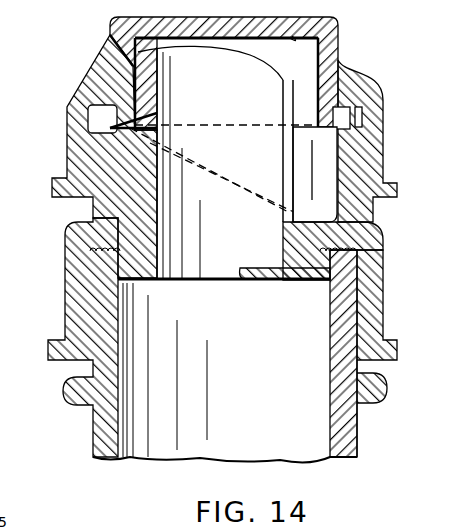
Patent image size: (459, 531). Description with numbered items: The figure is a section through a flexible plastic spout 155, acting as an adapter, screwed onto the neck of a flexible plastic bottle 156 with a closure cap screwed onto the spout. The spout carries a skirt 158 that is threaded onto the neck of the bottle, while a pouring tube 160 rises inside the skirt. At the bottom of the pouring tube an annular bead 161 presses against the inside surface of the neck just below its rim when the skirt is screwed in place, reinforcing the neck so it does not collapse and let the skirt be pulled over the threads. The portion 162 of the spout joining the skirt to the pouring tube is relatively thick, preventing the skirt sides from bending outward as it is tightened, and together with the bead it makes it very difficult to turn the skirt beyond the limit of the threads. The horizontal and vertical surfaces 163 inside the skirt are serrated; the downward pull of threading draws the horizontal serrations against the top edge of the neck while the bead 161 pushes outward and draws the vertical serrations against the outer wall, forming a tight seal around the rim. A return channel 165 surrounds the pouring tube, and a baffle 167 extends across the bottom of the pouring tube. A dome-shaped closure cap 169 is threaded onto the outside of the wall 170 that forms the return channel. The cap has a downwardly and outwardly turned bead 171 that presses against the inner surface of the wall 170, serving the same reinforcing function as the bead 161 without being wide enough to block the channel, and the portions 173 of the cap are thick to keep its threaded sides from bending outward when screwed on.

The flexible plastic spout 155 is at (268, 77).
The flexible plastic bottle 156 is at (318, 430).
The skirt 158 is at (372, 313).
The pouring tube 160 is at (191, 270).
The annular bead 161 is at (327, 283).
The thick portion 162 is at (365, 234).
The serrated horizontal and vertical surfaces 163 is at (90, 262).
The return channel 165 is at (327, 177).
The baffle 167 is at (245, 272).
The dome-shaped closure cap 169 is at (292, 36).
The wall 170 is at (360, 104).
The downwardly and outwardly turned bead 171 is at (130, 126).
The thick portions of the closure cap 173 is at (95, 90).